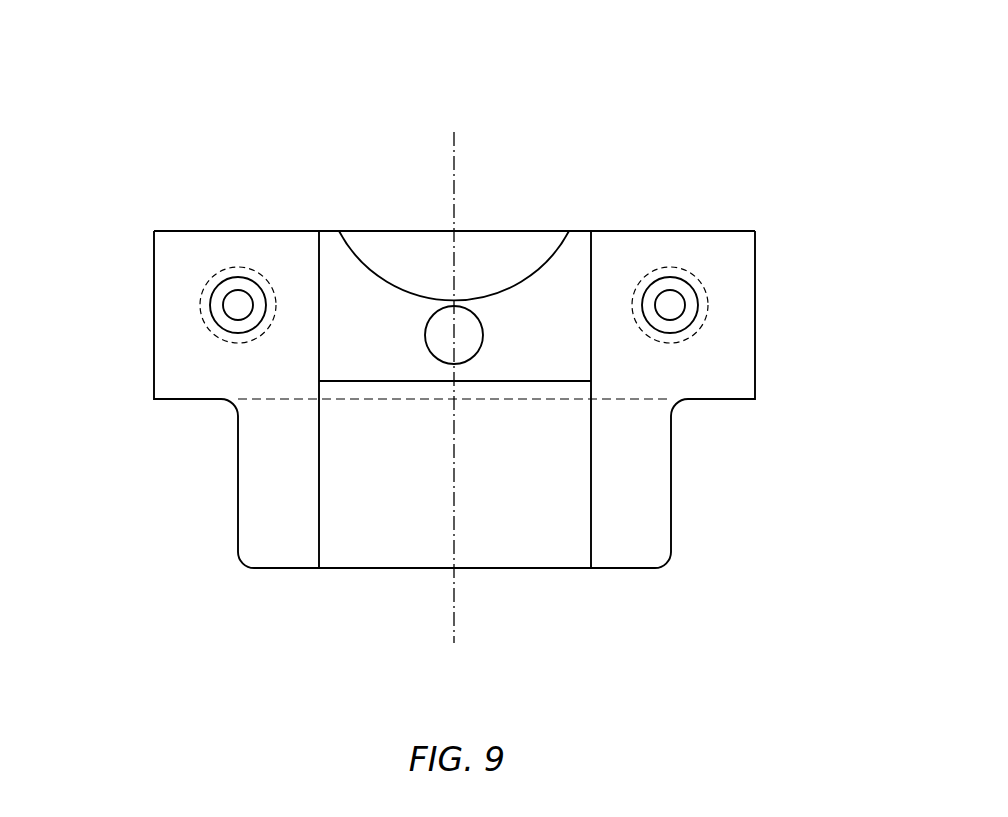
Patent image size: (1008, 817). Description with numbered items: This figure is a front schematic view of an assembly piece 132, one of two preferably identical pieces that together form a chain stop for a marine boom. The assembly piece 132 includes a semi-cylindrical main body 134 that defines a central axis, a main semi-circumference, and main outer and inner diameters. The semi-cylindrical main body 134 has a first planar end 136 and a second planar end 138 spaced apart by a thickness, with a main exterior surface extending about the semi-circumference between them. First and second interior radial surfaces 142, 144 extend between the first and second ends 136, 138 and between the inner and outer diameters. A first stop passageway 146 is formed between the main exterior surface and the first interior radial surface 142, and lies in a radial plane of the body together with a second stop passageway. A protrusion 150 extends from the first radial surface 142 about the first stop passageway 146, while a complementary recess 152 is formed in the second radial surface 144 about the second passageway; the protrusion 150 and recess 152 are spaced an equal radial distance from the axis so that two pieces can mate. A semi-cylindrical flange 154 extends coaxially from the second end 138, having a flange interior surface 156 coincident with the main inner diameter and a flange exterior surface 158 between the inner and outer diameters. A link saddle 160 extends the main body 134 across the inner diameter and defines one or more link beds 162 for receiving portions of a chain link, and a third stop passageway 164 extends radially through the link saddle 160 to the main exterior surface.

The assembly piece 132 is at (538, 85).
The semi-cylindrical main body 134 is at (292, 248).
The first planar end 136 is at (728, 231).
The second planar end 138 is at (728, 399).
The first interior radial surface 142 is at (739, 348).
The second interior radial surface 144 is at (178, 356).
The first stop passageway 146 is at (238, 290).
The protrusion 150 is at (703, 313).
The recess 152 is at (210, 317).
The semi-cylindrical flange 154 is at (652, 527).
The flange interior surface 156 is at (495, 499).
The flange exterior surface 158 is at (672, 468).
The link saddle 160 is at (507, 283).
The link bed 162 is at (358, 355).
The third stop passageway 164 is at (485, 339).